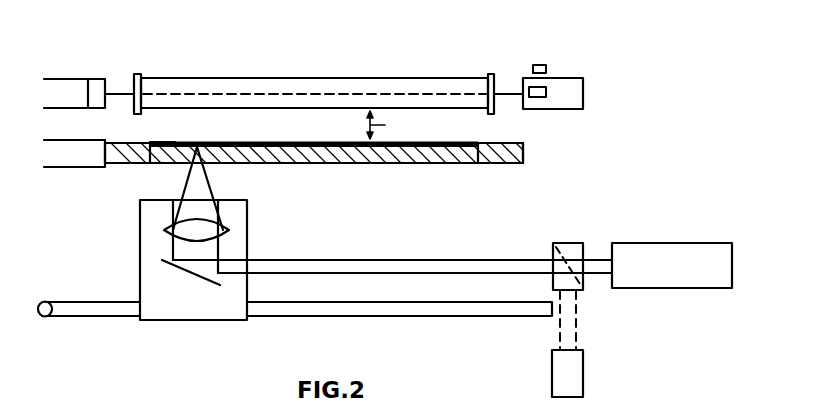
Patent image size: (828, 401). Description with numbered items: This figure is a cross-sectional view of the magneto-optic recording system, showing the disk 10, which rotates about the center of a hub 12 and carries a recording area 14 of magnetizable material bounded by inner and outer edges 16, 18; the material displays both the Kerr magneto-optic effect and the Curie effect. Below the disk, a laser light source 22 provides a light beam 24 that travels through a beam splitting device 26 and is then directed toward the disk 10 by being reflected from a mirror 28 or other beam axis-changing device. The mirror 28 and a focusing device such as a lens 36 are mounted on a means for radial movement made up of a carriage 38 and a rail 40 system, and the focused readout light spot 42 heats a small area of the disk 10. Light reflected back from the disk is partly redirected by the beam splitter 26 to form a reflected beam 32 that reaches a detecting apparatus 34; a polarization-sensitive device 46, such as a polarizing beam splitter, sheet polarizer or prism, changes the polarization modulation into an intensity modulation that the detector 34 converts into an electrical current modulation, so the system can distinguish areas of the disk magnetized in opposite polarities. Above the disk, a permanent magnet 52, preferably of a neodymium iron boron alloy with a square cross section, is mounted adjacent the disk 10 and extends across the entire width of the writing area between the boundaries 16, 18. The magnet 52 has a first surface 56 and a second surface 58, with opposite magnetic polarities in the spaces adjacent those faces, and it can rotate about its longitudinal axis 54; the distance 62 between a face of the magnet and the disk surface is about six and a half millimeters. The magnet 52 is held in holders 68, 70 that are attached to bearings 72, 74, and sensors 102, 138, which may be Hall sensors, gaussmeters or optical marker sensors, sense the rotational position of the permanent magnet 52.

The disk 10 is at (523, 153).
The hub 12 is at (105, 152).
The recording area 14 is at (291, 141).
The inner edge 16 is at (152, 142).
The outer edge 18 is at (482, 142).
The laser light source 22 is at (687, 288).
The light beam 24 is at (590, 257).
The beam splitting device 26 is at (572, 243).
The mirror 28 is at (203, 280).
The reflected beam 32 is at (577, 322).
The detecting apparatus 34 is at (583, 373).
The lens 36 is at (226, 230).
The carriage 38 is at (160, 320).
The rail 40 is at (79, 300).
The readout light spot 42 is at (188, 167).
The polarization-sensitive device 46 is at (560, 243).
The permanent magnet 52 is at (190, 78).
The longitudinal axis 54 is at (318, 94).
The first surface 56 is at (258, 78).
The second surface 58 is at (219, 110).
The distance 62 is at (392, 125).
The holder 68 is at (493, 75).
The holder 70 is at (139, 74).
The bearing 72 is at (575, 79).
The bearing 74 is at (68, 90).
The sensor 102 is at (546, 66).
The sensor 138 is at (546, 93).